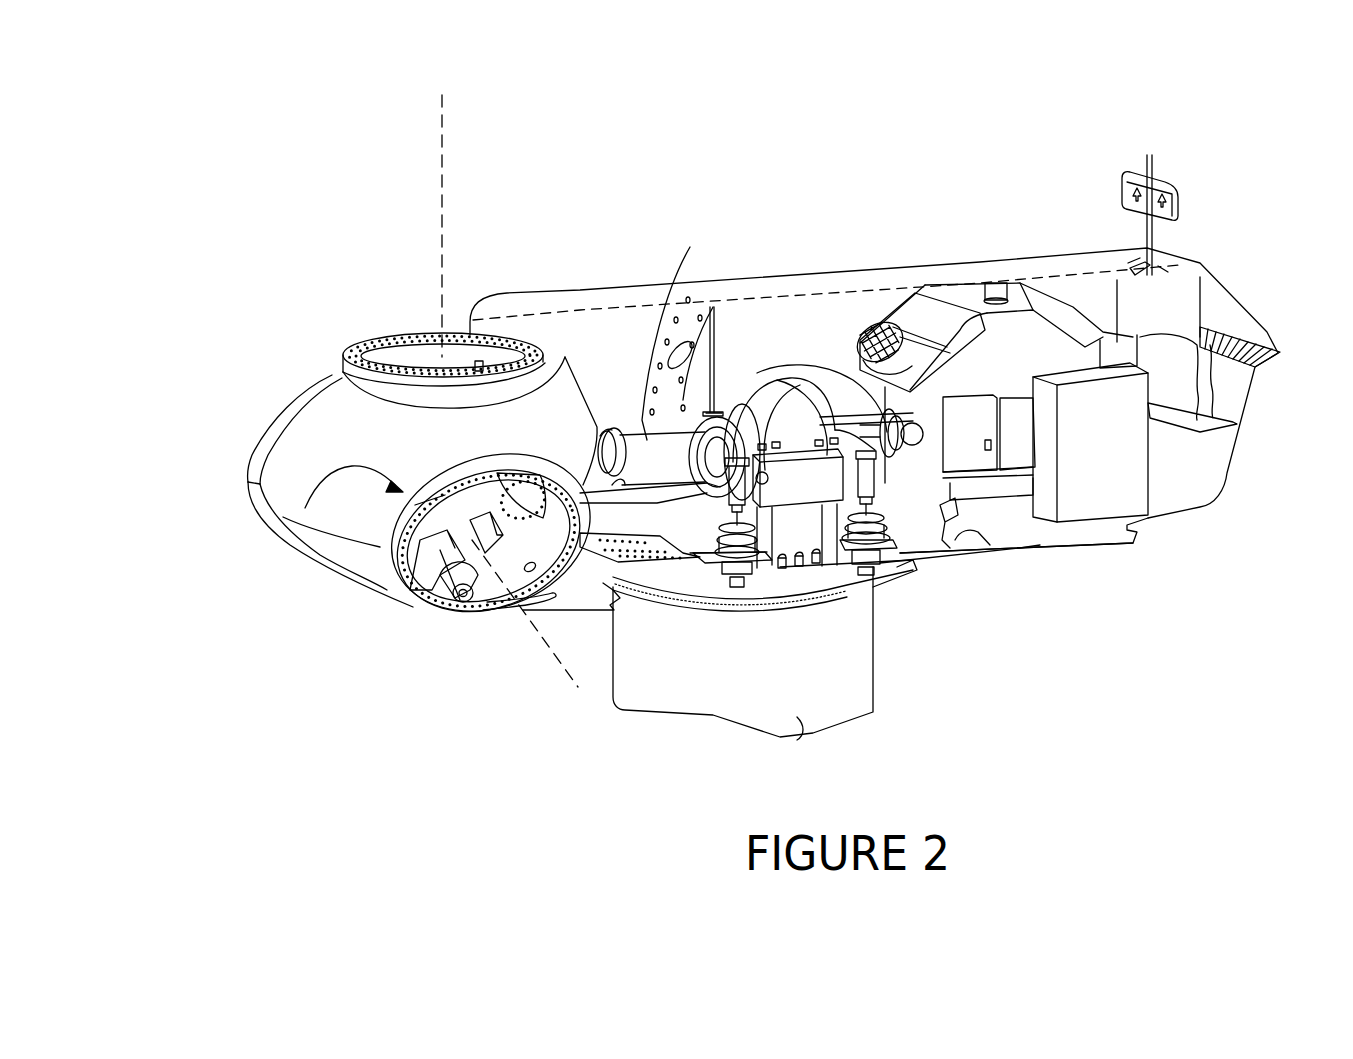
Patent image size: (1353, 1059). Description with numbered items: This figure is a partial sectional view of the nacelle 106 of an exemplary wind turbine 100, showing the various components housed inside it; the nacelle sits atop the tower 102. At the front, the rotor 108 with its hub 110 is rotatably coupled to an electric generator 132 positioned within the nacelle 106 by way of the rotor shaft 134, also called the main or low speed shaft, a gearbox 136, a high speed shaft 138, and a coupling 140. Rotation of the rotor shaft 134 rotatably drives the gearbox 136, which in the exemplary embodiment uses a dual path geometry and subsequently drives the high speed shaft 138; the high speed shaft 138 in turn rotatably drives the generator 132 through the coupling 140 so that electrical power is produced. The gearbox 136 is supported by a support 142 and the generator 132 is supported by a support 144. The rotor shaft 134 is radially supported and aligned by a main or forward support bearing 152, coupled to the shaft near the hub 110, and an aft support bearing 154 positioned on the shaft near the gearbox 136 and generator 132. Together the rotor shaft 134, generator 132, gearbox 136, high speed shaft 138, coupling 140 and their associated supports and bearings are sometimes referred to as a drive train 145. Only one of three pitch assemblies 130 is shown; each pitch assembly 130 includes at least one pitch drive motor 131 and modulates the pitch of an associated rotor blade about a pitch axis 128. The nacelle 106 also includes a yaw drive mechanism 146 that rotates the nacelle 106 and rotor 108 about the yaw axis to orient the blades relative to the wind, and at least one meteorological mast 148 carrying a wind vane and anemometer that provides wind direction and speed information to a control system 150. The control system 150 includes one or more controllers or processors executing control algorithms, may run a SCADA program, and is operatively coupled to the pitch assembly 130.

The wind turbine 100 is at (272, 207).
The tower 102 is at (797, 717).
The nacelle 106 is at (632, 226).
The rotor 108 is at (237, 470).
The hub 110 is at (345, 372).
The pitch axis 128 is at (443, 121).
The pitch assembly 130 is at (287, 535).
The pitch drive motor 131 is at (405, 518).
The electric generator 132 is at (968, 447).
The rotor shaft 134 is at (630, 442).
The gearbox 136 is at (798, 410).
The high speed shaft 138 is at (950, 550).
The coupling 140 is at (918, 390).
The support 142 is at (840, 573).
The support 144 is at (947, 485).
The drive train 145 is at (670, 405).
The yaw drive mechanism 146 is at (724, 585).
The meteorological mast 148 is at (1180, 193).
The control system 150 is at (1130, 473).
The forward support bearing 152 is at (613, 490).
The aft support bearing 154 is at (728, 422).